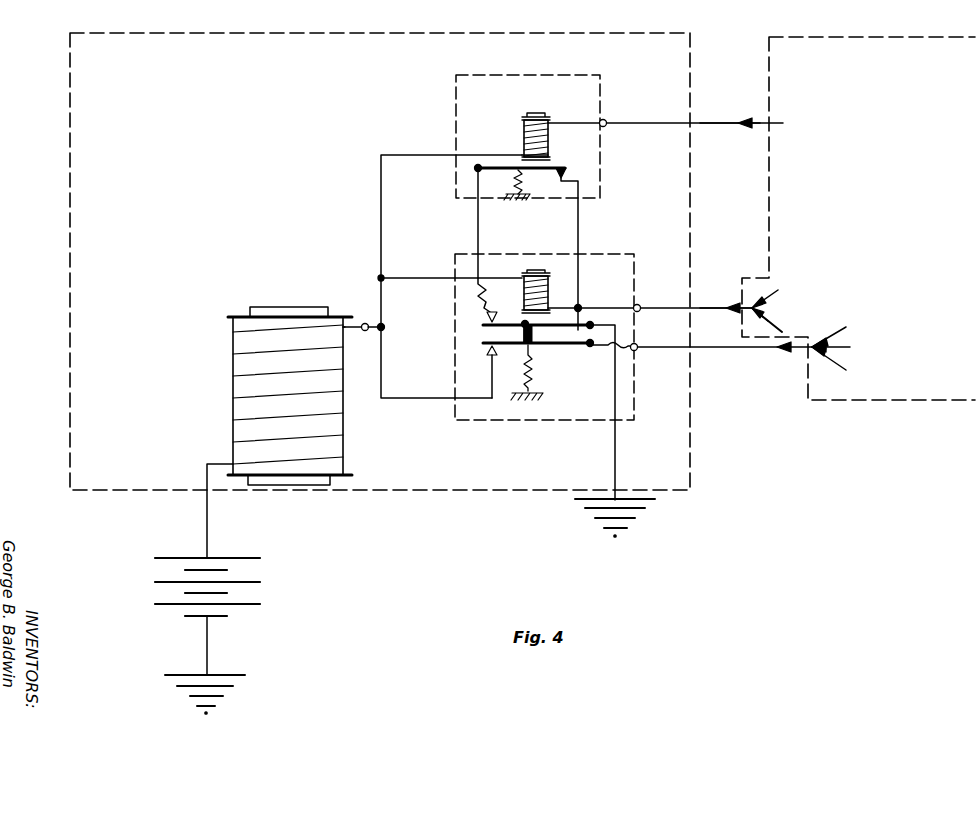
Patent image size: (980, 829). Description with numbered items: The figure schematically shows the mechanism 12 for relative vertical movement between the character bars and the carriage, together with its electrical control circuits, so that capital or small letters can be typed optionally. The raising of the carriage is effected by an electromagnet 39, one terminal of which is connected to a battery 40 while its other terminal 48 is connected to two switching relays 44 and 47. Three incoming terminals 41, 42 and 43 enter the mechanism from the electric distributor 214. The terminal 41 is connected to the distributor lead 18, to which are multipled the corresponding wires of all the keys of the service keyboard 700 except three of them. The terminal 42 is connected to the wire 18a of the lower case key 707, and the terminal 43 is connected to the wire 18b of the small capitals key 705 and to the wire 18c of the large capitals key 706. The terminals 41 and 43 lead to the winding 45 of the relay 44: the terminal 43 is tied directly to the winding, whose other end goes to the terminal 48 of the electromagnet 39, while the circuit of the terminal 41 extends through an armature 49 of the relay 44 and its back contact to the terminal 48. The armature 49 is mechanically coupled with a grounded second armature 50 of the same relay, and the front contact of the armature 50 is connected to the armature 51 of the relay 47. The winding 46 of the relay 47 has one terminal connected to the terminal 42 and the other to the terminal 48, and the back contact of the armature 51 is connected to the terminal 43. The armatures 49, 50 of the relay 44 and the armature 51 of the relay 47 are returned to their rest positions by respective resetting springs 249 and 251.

The mechanism 12 is at (66, 141).
The distributor lead 18 is at (725, 356).
The wire 18a is at (732, 138).
The wire 18b is at (738, 295).
The wire 18c is at (770, 313).
The electromagnet 39 is at (260, 386).
The battery 40 is at (182, 612).
The incoming terminal 41 is at (646, 338).
The incoming terminal 42 is at (616, 116).
The incoming terminal 43 is at (648, 298).
The switching relay 44 is at (641, 269).
The winding 45 is at (541, 293).
The winding 46 is at (545, 118).
The switching relay 47 is at (454, 110).
The terminal 48 is at (361, 322).
The armature 49 is at (491, 352).
The second armature 50 is at (486, 330).
The armature 51 is at (563, 175).
The electric distributor 214 is at (932, 403).
The resetting spring 249 is at (532, 373).
The resetting spring 251 is at (511, 197).
The service keyboard 700 is at (855, 348).
The small capitals key 705 is at (728, 298).
The large capitals key 706 is at (784, 324).
The lower case key 707 is at (711, 124).